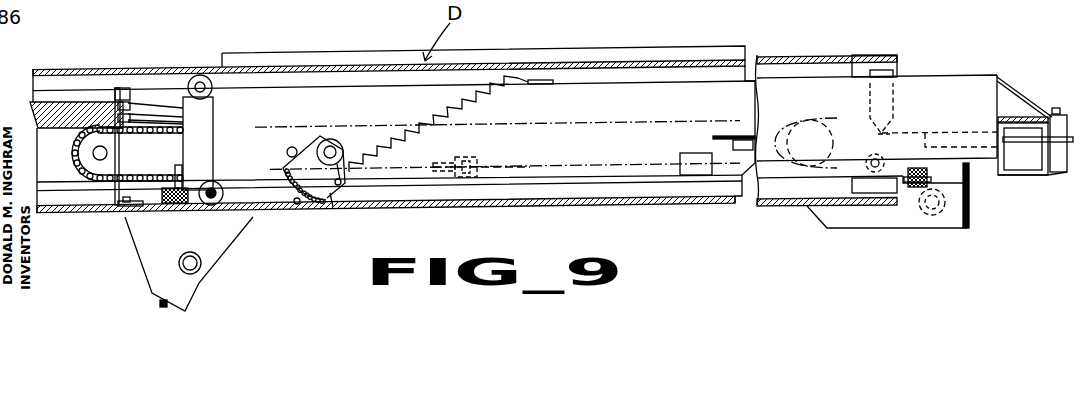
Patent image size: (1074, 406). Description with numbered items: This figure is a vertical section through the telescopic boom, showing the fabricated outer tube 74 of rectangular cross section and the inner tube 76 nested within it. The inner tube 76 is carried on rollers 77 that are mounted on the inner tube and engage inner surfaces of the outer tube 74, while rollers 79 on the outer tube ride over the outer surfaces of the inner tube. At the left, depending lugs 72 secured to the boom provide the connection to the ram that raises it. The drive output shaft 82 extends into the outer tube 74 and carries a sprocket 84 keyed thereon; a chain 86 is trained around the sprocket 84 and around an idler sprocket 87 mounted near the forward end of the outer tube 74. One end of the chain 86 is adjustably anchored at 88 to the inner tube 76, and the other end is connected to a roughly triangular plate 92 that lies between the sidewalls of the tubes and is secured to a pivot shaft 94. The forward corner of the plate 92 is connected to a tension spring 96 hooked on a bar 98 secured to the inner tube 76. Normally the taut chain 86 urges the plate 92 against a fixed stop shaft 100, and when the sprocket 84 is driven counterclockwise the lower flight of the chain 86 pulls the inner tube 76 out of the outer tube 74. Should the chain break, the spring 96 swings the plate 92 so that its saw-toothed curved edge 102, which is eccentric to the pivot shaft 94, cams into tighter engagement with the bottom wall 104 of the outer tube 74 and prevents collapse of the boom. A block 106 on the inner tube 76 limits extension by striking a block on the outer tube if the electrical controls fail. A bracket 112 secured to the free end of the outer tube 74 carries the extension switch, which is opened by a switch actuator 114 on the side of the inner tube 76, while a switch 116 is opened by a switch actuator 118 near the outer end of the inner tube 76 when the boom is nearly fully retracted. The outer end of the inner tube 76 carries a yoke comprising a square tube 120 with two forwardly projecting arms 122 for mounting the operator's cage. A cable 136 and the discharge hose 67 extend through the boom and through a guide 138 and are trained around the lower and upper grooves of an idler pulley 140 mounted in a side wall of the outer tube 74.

The discharge hose 67 is at (168, 108).
The depending lugs 72 is at (160, 232).
The outer tube 74 is at (345, 55).
The inner tube 76 is at (392, 113).
The rollers 77 is at (193, 76).
The rollers 79 is at (920, 177).
The output shaft 82 is at (80, 146).
The sprocket 84 is at (92, 160).
The chain 86 is at (270, 170).
The idler sprocket 87 is at (795, 124).
The chain anchor 88 is at (480, 165).
The plate 92 is at (329, 178).
The pivot shaft 94 is at (327, 139).
The tension spring 96 is at (482, 102).
The bar 98 is at (540, 85).
The stop shaft 100 is at (292, 147).
The curved edge 102 is at (290, 200).
The bottom wall 104 is at (297, 205).
The block 106 is at (693, 158).
The bracket 112 is at (830, 57).
The switch actuator 114 is at (722, 135).
The switch 116 is at (893, 97).
The switch actuator 118 is at (893, 123).
The square tube 120 is at (1030, 175).
The arms 122 is at (1058, 170).
The cable 136 is at (192, 118).
The guide 138 is at (127, 88).
The idler pulley 140 is at (55, 115).